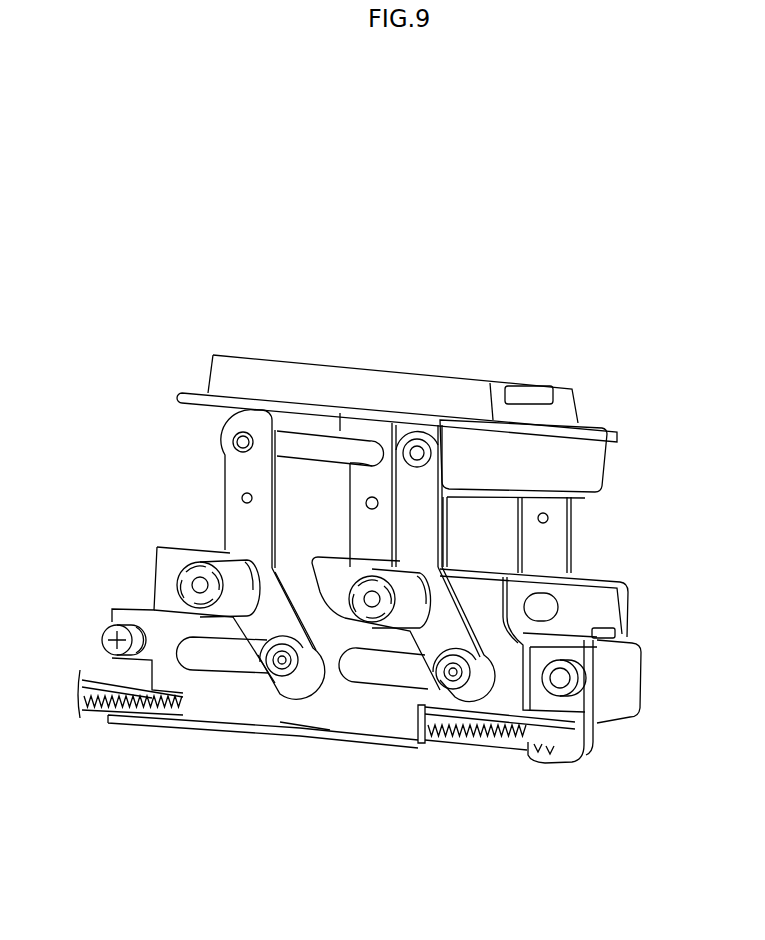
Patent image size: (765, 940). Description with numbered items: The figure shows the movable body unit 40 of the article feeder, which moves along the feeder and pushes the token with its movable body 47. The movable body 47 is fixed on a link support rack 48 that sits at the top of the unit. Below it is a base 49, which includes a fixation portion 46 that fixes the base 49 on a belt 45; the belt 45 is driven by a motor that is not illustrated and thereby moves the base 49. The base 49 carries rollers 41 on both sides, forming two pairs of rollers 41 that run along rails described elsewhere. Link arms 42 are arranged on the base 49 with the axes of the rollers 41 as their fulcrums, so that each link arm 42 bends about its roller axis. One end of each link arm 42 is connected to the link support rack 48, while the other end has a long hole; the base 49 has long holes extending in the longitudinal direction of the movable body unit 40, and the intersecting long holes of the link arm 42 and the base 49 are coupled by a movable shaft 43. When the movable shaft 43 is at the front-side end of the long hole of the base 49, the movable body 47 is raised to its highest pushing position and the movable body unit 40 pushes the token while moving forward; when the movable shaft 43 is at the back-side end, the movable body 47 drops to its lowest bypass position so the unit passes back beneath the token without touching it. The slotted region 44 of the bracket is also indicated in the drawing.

The movable body unit 40 is at (433, 281).
The rollers 41 is at (228, 562).
The link arms 42 is at (403, 527).
The movable shaft 43 is at (283, 662).
The bracket slot 44 is at (237, 675).
The belt 45 is at (476, 737).
The fixation portion 46 is at (575, 765).
The movable body 47 is at (565, 402).
The link support rack 48 is at (568, 469).
The base 49 is at (165, 610).